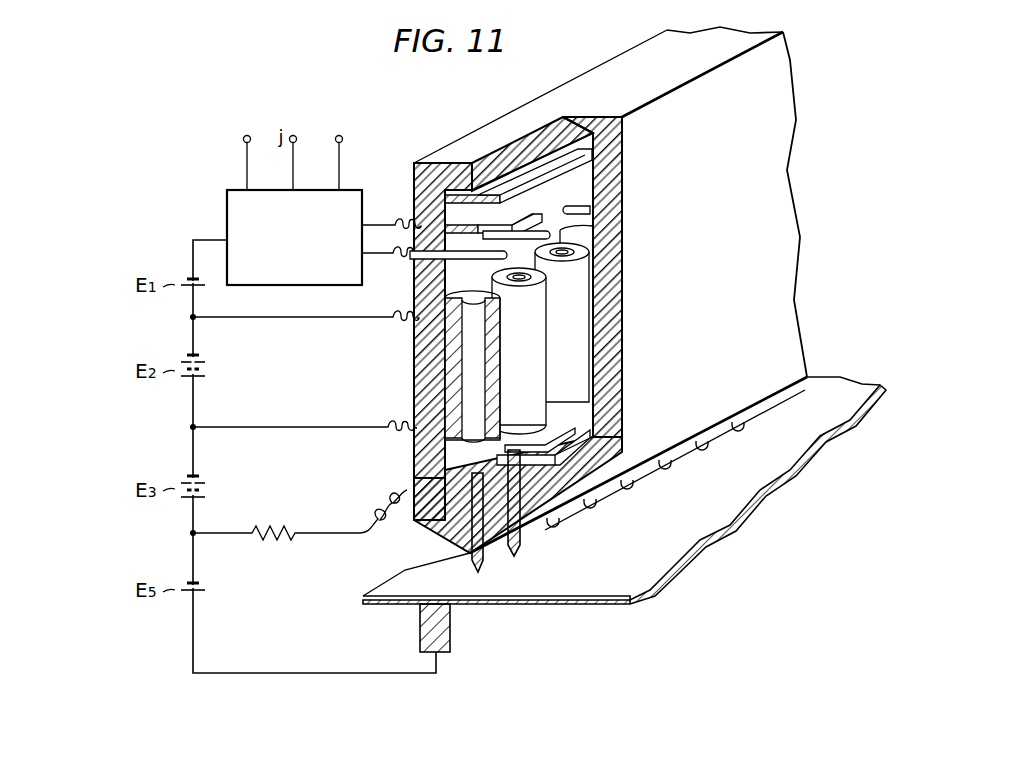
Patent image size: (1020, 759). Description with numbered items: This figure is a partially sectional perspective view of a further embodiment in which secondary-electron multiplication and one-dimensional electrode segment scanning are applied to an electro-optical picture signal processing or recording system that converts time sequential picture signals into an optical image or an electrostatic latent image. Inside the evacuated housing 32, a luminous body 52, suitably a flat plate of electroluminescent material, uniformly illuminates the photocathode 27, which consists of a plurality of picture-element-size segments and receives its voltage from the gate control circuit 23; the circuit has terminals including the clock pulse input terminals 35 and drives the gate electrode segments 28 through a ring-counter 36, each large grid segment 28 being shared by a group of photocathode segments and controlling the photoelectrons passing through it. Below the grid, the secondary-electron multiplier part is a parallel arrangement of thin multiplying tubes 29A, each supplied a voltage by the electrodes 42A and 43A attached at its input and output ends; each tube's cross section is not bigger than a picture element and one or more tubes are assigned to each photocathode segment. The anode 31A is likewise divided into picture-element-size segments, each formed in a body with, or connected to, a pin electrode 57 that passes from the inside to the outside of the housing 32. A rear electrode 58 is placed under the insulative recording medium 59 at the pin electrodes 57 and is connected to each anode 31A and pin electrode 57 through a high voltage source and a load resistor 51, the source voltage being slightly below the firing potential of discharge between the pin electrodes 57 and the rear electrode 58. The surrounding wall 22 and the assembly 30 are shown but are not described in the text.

The wall 22 is at (738, 497).
The gate control circuit 23 is at (227, 205).
The photocathode 27 is at (596, 160).
The gate electrode segments 28 is at (596, 198).
The thin tubes for secondary-electron multiplication 29A is at (548, 318).
The nozzle assembly 30 is at (688, 190).
The anode 31A is at (560, 430).
The evacuated housing 32 is at (630, 455).
The input terminals for clock pulses 35 is at (339, 134).
The ring-counter 36 is at (248, 134).
The electrode 42A is at (575, 268).
The electrode 43A is at (500, 398).
The load resistor 51 is at (272, 540).
The luminous body 52 is at (612, 140).
The pin electrode 57 is at (520, 545).
The rear electrode 58 is at (497, 616).
The insulative recording medium 59 is at (610, 604).